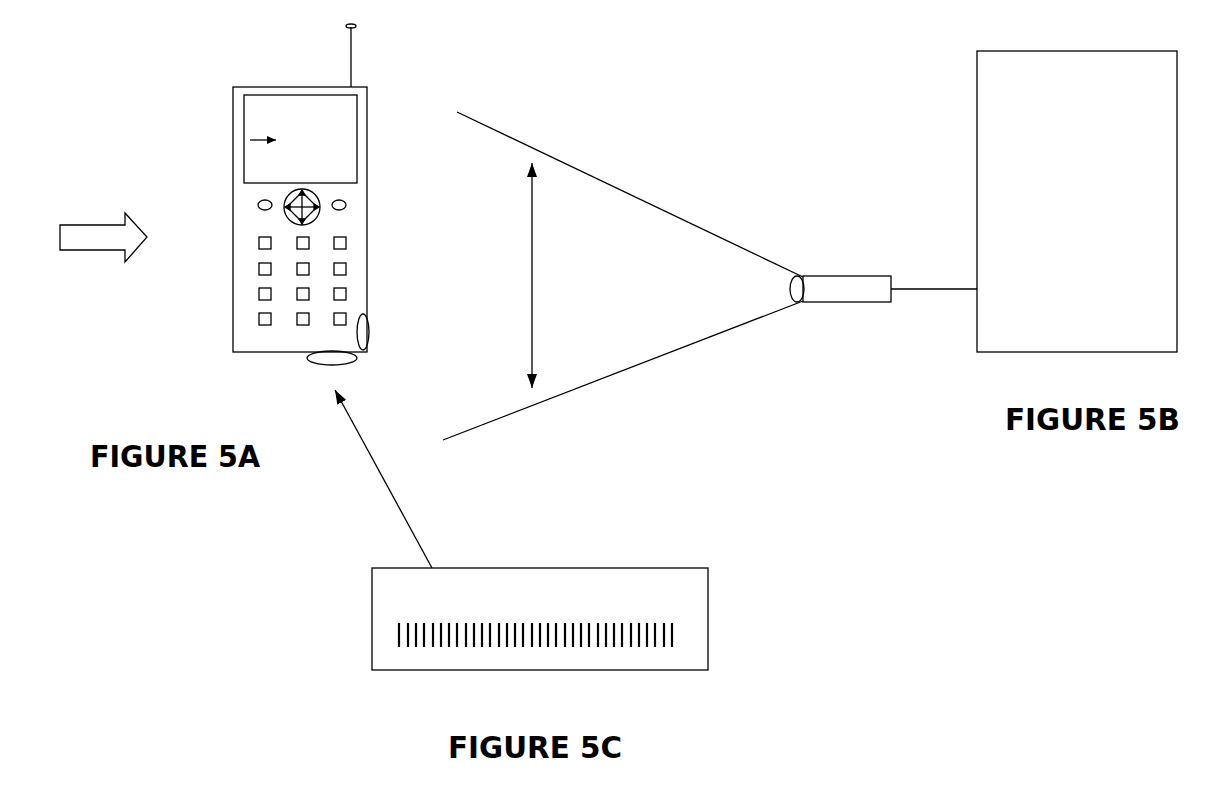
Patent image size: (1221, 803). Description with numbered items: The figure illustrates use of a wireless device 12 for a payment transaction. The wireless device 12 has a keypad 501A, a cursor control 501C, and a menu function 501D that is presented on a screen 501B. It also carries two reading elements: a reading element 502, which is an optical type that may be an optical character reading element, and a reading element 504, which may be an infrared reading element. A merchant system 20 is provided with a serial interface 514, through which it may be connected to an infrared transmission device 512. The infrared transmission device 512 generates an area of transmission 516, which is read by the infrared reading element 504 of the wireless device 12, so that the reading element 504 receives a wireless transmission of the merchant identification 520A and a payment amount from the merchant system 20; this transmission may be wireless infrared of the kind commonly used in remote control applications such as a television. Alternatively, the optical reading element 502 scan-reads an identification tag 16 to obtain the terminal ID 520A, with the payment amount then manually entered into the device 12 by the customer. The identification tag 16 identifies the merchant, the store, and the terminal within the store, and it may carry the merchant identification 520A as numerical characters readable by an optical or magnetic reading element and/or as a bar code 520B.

In FIG. 5A, the wireless device 12 is at (103, 229).
In FIG. 5A, the keypad 501A is at (253, 290).
In FIG. 5A, the screen 501B is at (359, 162).
In FIG. 5A, the cursor control 501C is at (322, 214).
In FIG. 5A, the menu function 501D is at (272, 137).
In FIG. 5A, the reading element 502 is at (339, 364).
In FIG. 5A, the reading element 504 is at (384, 343).
In FIG. 5A, the area of transmission 516 is at (532, 213).
In FIG. 5B, the infrared transmission device 512 is at (817, 273).
In FIG. 5B, the serial interface 514 is at (940, 289).
In FIG. 5B, the merchant system 20 is at (1077, 201).
In FIG. 5C, the identification tag 16 is at (507, 565).
In FIG. 5C, the merchant identification 520A is at (570, 577).
In FIG. 5C, the bar code 520B is at (618, 615).